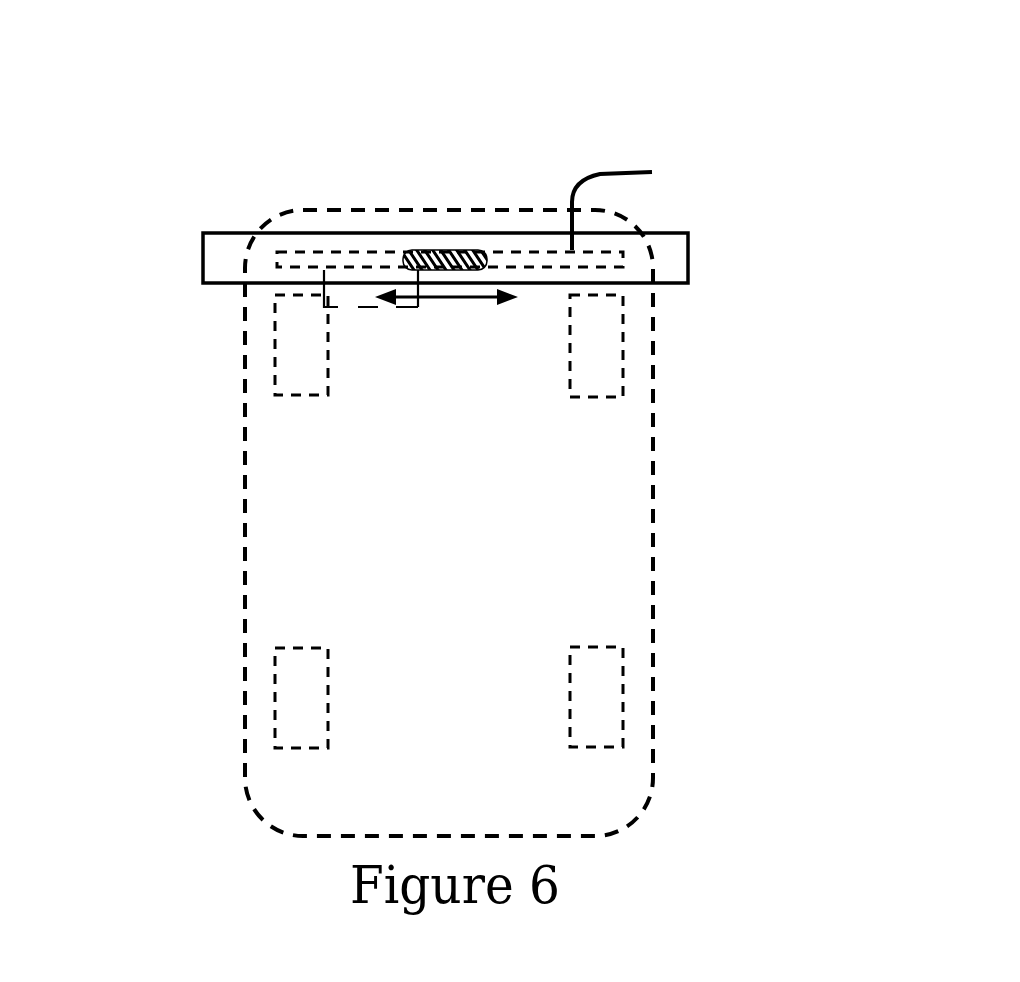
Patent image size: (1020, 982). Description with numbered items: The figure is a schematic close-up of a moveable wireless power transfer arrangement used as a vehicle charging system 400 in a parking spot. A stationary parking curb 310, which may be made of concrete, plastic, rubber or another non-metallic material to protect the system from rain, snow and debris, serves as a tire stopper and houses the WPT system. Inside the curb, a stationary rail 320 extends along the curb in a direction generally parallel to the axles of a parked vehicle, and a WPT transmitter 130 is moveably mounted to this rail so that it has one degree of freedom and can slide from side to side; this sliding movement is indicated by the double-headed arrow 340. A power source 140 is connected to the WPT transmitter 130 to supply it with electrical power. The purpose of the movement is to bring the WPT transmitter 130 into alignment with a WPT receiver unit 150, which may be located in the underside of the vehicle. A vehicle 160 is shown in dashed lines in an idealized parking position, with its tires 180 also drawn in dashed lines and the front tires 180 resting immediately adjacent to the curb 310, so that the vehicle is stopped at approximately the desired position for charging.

The WPT transmitter 130 is at (450, 250).
The power source 140 is at (630, 173).
The WPT receiver unit 150 is at (358, 303).
The vehicle 160 is at (655, 517).
The tires 180 is at (570, 680).
The parking curb 310 is at (203, 253).
The stationary rail 320 is at (328, 250).
The direction of sliding movement 340 is at (458, 297).
The vehicle charging system 400 is at (522, 172).